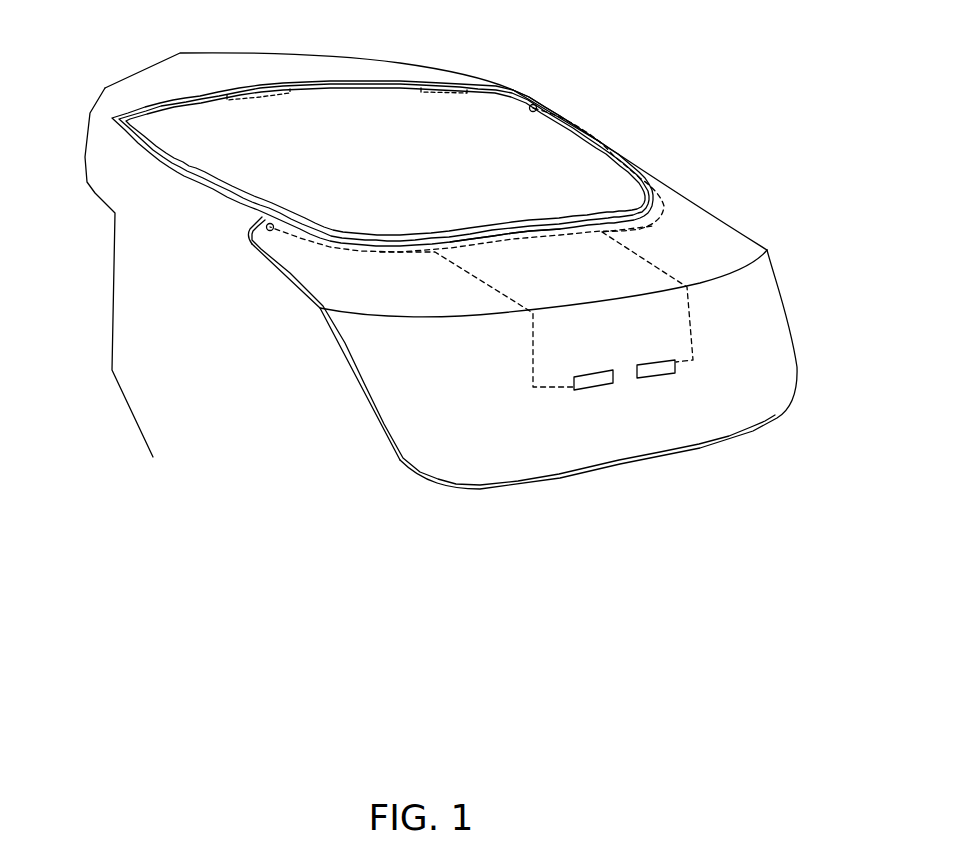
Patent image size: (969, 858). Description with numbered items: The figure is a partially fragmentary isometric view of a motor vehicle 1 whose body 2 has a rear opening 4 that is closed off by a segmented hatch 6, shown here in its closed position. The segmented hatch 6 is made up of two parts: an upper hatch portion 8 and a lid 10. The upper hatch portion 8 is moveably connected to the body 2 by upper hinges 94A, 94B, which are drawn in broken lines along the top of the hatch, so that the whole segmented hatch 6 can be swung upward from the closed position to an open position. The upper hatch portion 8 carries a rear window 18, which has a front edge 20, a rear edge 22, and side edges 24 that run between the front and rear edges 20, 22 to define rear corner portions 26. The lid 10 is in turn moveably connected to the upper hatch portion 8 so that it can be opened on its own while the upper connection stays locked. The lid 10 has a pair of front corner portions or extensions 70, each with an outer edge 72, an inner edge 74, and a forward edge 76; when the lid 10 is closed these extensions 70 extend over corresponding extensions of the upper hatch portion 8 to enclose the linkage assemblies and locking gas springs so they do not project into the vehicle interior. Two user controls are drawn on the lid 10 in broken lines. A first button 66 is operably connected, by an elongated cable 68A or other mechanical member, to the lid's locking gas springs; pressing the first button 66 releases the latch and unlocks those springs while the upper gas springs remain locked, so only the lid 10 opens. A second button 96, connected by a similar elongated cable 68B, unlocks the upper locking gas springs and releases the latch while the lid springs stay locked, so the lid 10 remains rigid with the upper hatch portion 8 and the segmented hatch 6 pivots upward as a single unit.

The motor vehicle 1 is at (722, 190).
The body 2 is at (402, 58).
The rear opening 4 is at (615, 152).
The segmented hatch 6 is at (732, 256).
The upper hatch portion 8 is at (547, 143).
The lid 10 is at (765, 289).
The rear window 18 is at (487, 140).
The front edge 20 is at (353, 90).
The rear edge 22 is at (507, 232).
The side edges 24 is at (597, 134).
The rear corner portions 26 is at (643, 221).
The first button 66 is at (593, 388).
The elongated cable 68A is at (487, 283).
The elongated cable 68B is at (647, 263).
The front corner portions or extensions 70 is at (680, 213).
The outer edge 72 is at (275, 278).
The inner edge 74 is at (297, 230).
The forward edge 76 is at (254, 229).
The upper hinge 94A is at (260, 97).
The upper hinge 94B is at (443, 94).
The second button 96 is at (655, 374).